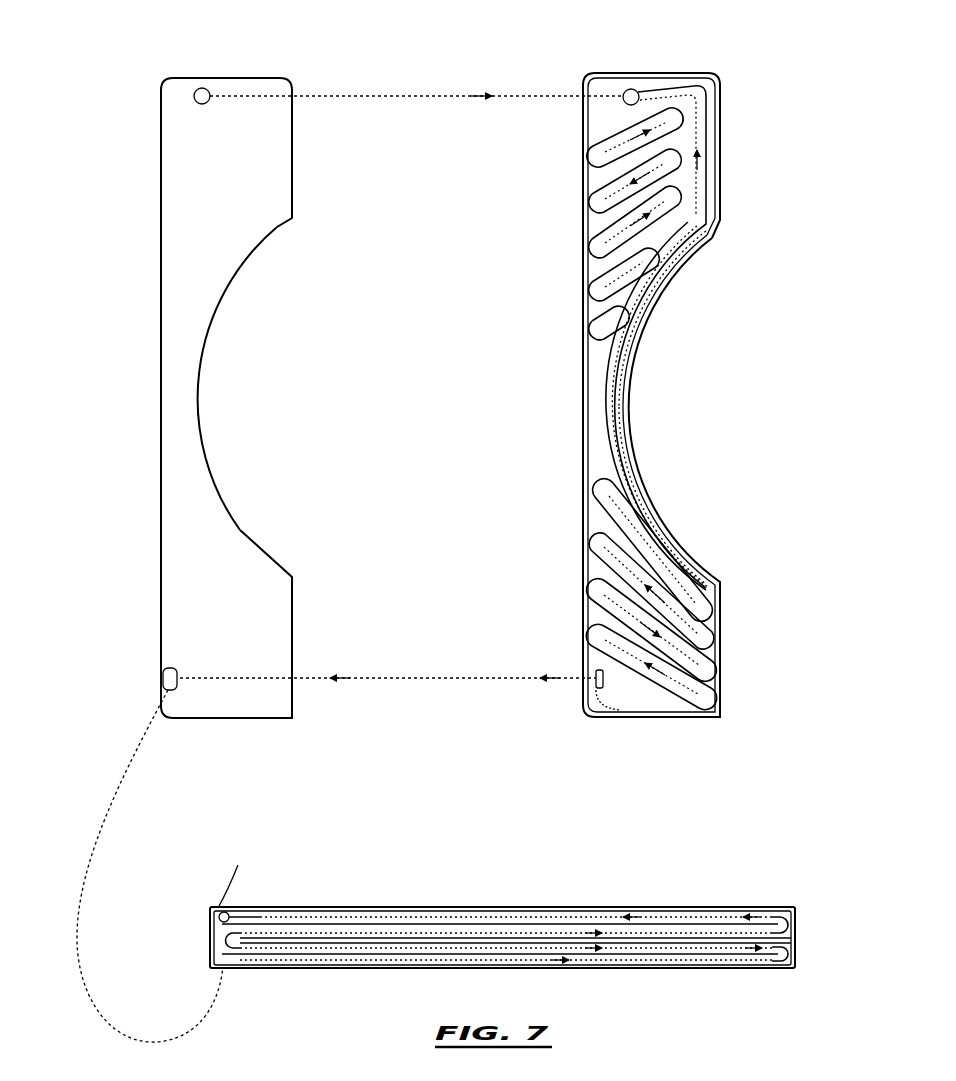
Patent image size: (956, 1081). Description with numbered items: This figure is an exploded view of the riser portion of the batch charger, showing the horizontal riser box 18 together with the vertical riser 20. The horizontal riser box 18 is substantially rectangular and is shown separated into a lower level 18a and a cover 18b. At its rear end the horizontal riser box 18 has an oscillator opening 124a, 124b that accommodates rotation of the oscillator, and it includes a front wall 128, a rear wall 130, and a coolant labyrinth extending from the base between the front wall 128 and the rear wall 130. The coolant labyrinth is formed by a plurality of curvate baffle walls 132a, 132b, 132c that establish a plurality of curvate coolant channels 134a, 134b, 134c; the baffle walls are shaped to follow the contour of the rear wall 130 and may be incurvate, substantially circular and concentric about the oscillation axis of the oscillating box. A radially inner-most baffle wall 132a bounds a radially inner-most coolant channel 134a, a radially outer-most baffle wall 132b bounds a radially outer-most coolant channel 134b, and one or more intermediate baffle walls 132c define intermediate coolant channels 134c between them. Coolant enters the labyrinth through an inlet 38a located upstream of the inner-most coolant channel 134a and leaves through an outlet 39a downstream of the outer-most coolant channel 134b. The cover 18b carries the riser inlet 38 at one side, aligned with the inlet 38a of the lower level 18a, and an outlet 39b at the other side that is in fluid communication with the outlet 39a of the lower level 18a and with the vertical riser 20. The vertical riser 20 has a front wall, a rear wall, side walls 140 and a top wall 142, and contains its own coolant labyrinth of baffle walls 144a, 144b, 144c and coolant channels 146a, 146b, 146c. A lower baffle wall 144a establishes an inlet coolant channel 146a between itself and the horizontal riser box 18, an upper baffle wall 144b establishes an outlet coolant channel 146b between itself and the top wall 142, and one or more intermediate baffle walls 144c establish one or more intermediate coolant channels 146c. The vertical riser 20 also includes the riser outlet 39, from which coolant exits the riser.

The horizontal riser box 18 is at (464, 70).
The lower level 18a is at (673, 62).
The cover 18b is at (258, 62).
The vertical riser 20 is at (773, 990).
The riser inlet 38 is at (200, 86).
The inlet 38a is at (620, 88).
The riser outlet 39 is at (219, 908).
The outlet 39a is at (598, 674).
The outlet 39b is at (166, 668).
The oscillator opening 124a is at (658, 395).
The oscillator opening 124b is at (256, 390).
The front wall 128 is at (592, 370).
The rear wall 130 is at (722, 192).
The radially inner-most baffle wall 132a is at (622, 458).
The radially outer-most baffle wall 132b is at (642, 682).
The intermediate baffle wall 132c is at (638, 538).
The radially inner-most coolant channel 134a is at (628, 347).
The radially outer-most coolant channel 134b is at (648, 690).
The intermediate coolant channel 134c is at (696, 600).
The side walls 140 is at (211, 940).
The top wall 142 is at (506, 916).
The lower baffle wall 144a is at (618, 955).
The upper baffle wall 144b is at (697, 936).
The intermediate baffle wall 144c is at (722, 936).
The inlet coolant channel 146a is at (704, 956).
The outlet coolant channel 146b is at (629, 915).
The intermediate coolant channel 146c is at (703, 938).